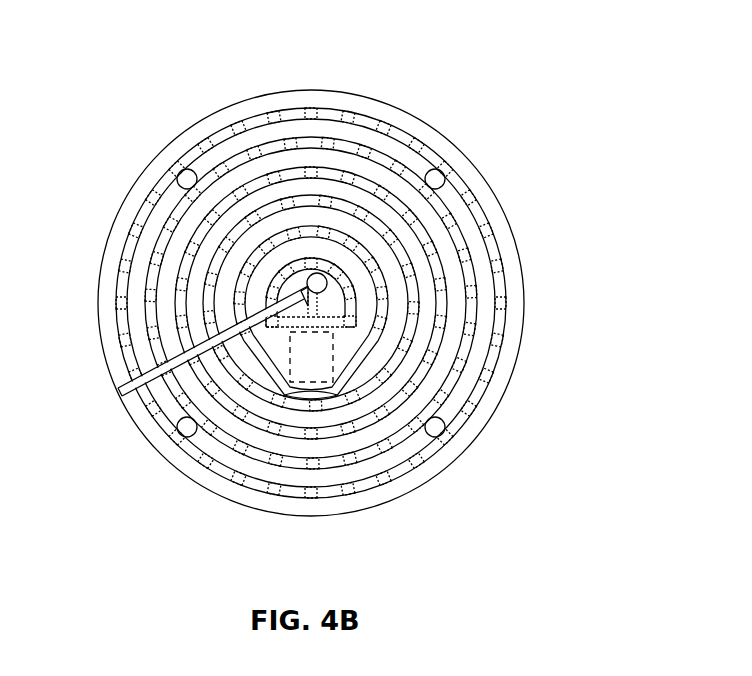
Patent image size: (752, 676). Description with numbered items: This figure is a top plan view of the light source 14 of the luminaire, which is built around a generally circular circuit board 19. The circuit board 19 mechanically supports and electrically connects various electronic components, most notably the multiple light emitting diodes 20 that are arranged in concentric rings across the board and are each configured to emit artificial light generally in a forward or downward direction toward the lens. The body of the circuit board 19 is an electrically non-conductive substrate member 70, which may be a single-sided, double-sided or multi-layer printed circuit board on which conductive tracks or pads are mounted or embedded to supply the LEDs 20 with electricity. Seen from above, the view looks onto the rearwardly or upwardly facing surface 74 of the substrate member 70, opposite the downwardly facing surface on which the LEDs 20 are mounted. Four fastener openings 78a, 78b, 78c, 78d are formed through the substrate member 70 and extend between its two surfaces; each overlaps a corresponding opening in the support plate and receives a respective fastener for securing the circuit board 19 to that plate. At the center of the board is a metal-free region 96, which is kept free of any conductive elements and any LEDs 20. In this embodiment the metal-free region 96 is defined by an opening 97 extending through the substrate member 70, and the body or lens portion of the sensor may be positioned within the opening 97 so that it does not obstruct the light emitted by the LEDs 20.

The light source 14 is at (470, 71).
The circuit board 19 is at (525, 279).
The light emitting diodes 20 is at (321, 165).
The electrically non-conductive substrate member 70 is at (507, 220).
The upwardly facing surface 74 is at (152, 287).
The fastener opening 78a is at (179, 171).
The fastener opening 78b is at (443, 172).
The fastener opening 78c is at (443, 435).
The fastener opening 78d is at (180, 435).
The metal-free region 96 is at (291, 391).
The opening 97 is at (322, 362).